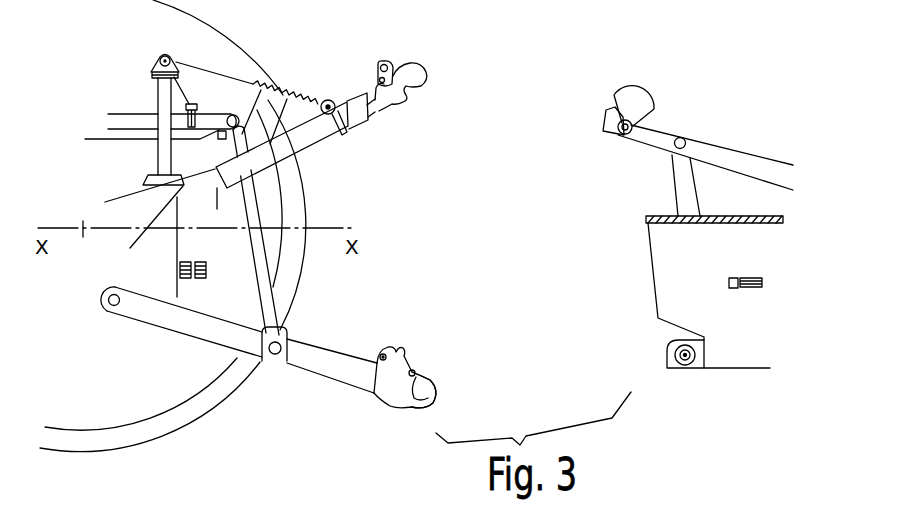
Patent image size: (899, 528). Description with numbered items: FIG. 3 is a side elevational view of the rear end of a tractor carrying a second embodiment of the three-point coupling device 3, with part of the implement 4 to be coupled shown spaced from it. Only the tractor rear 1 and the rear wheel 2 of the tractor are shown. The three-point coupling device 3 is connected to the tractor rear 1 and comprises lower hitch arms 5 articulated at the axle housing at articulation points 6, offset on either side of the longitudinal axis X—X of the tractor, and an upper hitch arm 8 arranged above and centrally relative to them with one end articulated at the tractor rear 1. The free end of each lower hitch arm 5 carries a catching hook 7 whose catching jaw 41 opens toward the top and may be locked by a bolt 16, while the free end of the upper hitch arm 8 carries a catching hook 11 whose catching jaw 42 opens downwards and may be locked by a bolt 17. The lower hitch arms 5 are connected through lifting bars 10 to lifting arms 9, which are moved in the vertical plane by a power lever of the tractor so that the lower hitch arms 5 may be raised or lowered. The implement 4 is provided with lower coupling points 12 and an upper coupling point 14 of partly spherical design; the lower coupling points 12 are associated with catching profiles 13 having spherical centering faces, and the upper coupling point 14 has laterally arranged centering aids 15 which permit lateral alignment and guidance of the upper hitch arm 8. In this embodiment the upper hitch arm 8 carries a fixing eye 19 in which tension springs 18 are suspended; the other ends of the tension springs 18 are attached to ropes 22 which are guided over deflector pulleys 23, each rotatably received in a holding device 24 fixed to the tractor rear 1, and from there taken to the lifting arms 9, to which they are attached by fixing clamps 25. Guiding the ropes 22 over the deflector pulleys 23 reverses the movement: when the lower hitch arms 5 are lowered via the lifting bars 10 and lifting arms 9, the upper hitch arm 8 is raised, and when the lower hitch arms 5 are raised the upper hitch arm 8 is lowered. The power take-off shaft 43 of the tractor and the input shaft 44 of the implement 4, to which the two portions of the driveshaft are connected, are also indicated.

The tractor rear 1 is at (130, 205).
The rear wheel 2 is at (178, 380).
The three-point coupling device 3 is at (305, 378).
The implement 4 is at (742, 240).
The lower hitch arm 5 is at (353, 372).
The articulation point 6 is at (113, 308).
The catching hook 7 is at (410, 400).
The upper hitch arm 8 is at (348, 133).
The lifting arm 9 is at (111, 114).
The lifting bar 10 is at (245, 193).
The catching hook 11 is at (393, 106).
The lower coupling point 12 is at (686, 368).
The catching profile 13 is at (666, 352).
The upper coupling point 14 is at (621, 136).
The centering aid 15 is at (638, 104).
The bolt 16 is at (415, 372).
The bolt 17 is at (380, 64).
The tension spring 18 is at (302, 94).
The fixing eye 19 is at (350, 82).
The rope 22 is at (226, 76).
The deflector pulley 23 is at (166, 55).
The holding device 24 is at (158, 88).
The fixing clamp 25 is at (191, 106).
The catching jaw 41 is at (430, 381).
The catching jaw 42 is at (426, 88).
The power take-off shaft 43 is at (207, 268).
The input shaft 44 is at (728, 283).